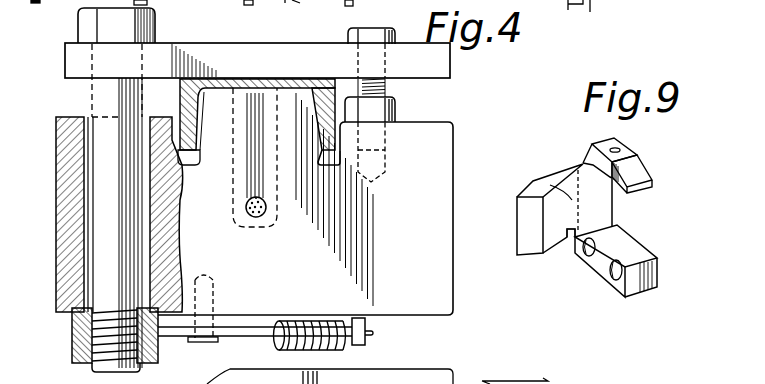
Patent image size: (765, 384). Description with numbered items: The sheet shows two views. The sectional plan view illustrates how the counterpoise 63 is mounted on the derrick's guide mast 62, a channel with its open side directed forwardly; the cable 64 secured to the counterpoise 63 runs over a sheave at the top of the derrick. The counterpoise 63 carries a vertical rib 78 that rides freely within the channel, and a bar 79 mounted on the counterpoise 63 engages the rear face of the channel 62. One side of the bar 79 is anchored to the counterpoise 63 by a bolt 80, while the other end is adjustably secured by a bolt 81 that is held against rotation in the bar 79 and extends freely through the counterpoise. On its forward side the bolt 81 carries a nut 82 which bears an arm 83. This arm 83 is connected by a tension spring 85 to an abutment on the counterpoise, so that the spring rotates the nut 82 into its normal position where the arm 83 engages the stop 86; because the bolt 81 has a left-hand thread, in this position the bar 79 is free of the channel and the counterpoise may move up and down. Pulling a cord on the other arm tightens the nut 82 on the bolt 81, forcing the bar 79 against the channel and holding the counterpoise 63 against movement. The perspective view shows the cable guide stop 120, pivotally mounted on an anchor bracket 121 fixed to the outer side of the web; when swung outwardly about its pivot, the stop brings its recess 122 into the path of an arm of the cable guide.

In FIG. 4, the guide mast 62 is at (237, 82).
In FIG. 4, the counterpoise 63 is at (417, 207).
In FIG. 4, the cable 64 is at (255, 216).
In FIG. 4, the vertical rib 78 is at (285, 100).
In FIG. 4, the bar 79 is at (205, 38).
In FIG. 4, the bolt 80 is at (387, 87).
In FIG. 4, the bolt 81 is at (103, 97).
In FIG. 4, the nut 82 is at (78, 347).
In FIG. 4, the arm 83 is at (241, 334).
In FIG. 4, the tension spring 85 is at (335, 347).
In FIG. 4, the stop 86 is at (205, 343).
In FIG. 9, the cable guide stop 120 is at (550, 223).
In FIG. 9, the anchor bracket 121 is at (597, 270).
In FIG. 9, the recess 122 is at (570, 243).